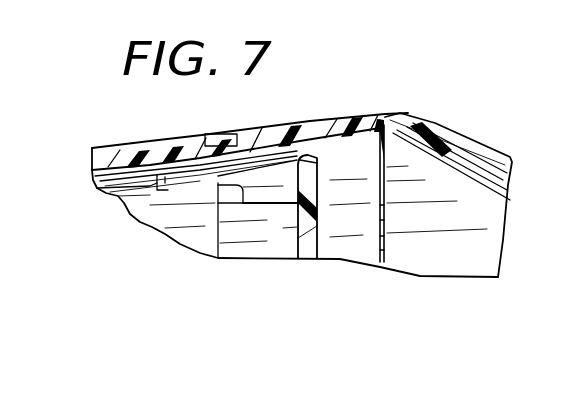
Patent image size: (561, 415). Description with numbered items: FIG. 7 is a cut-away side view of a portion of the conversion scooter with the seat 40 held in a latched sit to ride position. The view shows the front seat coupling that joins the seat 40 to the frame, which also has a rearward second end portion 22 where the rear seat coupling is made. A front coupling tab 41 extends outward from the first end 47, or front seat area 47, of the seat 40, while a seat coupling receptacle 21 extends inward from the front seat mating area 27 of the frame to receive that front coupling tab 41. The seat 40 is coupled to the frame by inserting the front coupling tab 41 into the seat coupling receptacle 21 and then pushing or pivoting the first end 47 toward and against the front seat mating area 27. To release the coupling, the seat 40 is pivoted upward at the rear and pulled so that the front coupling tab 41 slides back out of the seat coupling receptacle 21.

The seat coupling receptacle 21 is at (185, 158).
The second end portion of the frame 22 is at (197, 238).
The front seat mating area 27 is at (297, 192).
The seat 40 is at (447, 190).
The front coupling tab 41 is at (190, 160).
The first end of the seat 47 is at (343, 126).